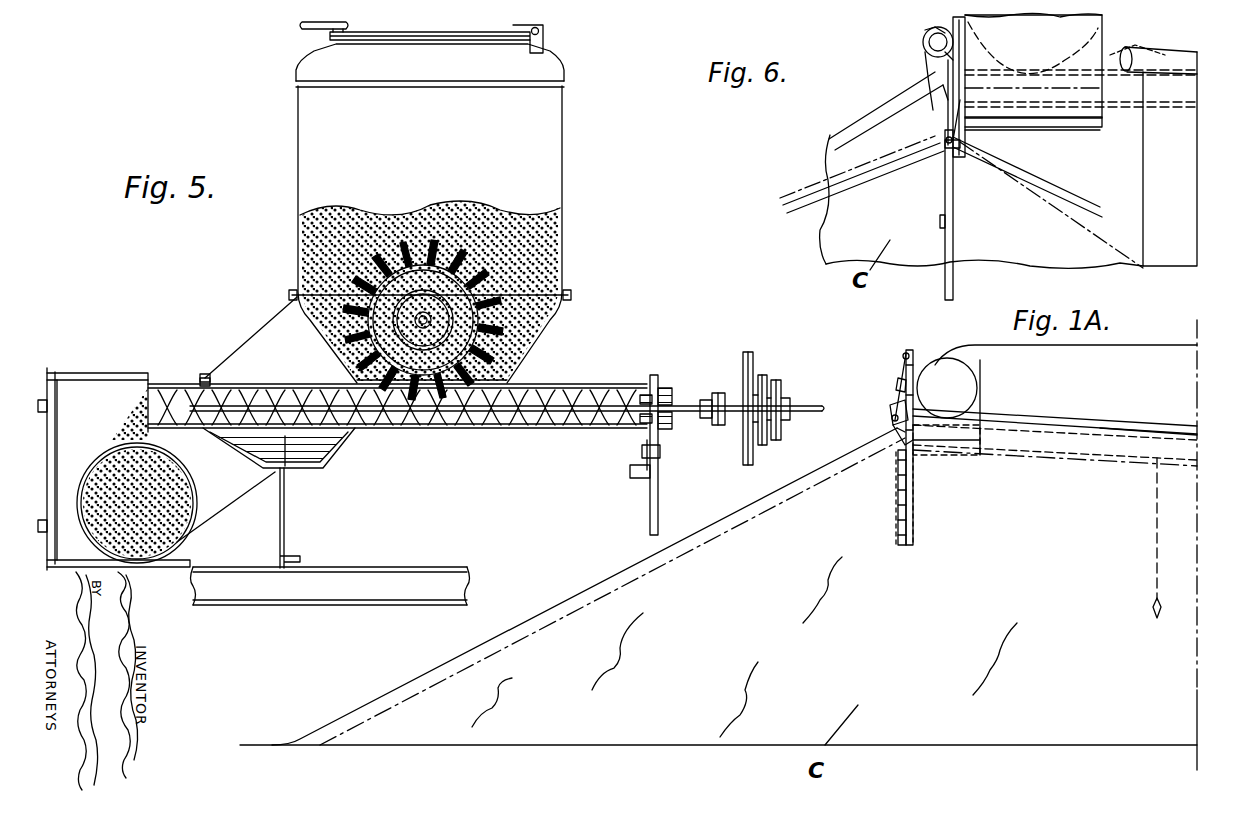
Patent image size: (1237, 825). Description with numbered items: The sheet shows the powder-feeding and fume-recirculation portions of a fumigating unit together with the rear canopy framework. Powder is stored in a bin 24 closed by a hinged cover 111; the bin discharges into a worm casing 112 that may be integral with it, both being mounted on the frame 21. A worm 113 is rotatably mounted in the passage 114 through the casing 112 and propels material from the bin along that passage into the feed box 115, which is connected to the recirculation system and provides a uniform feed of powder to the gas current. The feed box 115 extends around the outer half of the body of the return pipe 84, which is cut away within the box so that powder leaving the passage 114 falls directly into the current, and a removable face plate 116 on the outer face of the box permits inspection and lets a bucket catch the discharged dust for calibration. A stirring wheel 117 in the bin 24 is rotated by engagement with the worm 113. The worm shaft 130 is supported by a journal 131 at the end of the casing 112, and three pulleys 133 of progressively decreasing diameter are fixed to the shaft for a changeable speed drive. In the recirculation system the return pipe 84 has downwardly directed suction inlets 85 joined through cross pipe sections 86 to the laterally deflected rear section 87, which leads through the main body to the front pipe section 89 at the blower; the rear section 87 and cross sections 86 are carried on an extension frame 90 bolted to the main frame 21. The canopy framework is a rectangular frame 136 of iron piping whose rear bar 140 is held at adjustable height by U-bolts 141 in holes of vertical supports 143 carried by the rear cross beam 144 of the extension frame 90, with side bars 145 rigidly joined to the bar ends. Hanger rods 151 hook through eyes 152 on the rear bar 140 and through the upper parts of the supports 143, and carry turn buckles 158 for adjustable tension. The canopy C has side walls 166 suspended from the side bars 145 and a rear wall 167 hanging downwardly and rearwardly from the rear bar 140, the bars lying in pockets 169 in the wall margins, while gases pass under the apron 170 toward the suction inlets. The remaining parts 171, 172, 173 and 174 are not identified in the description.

In FIG. 5, the bin 24 is at (532, 145).
In FIG. 5, the hinged cover 111 is at (430, 39).
In FIG. 5, the front pipe section 89 is at (285, 343).
In FIG. 5, the stirring wheel 117 is at (478, 283).
In FIG. 5, the worm casing 112 is at (522, 388).
In FIG. 5, the passage 114 is at (518, 424).
In FIG. 5, the worm 113 is at (583, 424).
In FIG. 5, the feed box 115 is at (108, 378).
In FIG. 5, the removable face plate 116 is at (47, 440).
In FIG. 5, the return pipe 84 is at (167, 558).
In FIG. 1A, the return pipe 84 is at (1140, 368).
In FIG. 5, the frame 21 is at (375, 590).
In FIG. 5, the journal 131 is at (677, 437).
In FIG. 5, the worm shaft 130 is at (688, 404).
In FIG. 5, the pulleys 133 is at (775, 375).
In FIG. 1A, the rear wall 167 is at (612, 578).
In FIG. 6, the rear wall 167 is at (852, 129).
In FIG. 1A, the side walls 166 is at (1058, 718).
In FIG. 6, the side walls 166 is at (1060, 240).
In FIG. 1A, the rear section 87 is at (1020, 380).
In FIG. 1A, the cross pipe sections 86 is at (947, 380).
In FIG. 6, the cross pipe sections 86 is at (1088, 34).
In FIG. 1A, the vertical supports 143 is at (908, 350).
In FIG. 6, the vertical supports 143 is at (966, 47).
In FIG. 1A, the pockets 169 is at (1088, 443).
In FIG. 6, the pockets 169 is at (935, 66).
In FIG. 1A, the extension frame 90 is at (1185, 432).
In FIG. 1A, the suction inlets 85 is at (950, 453).
In FIG. 6, the suction inlets 85 is at (1067, 127).
In FIG. 1A, the hanger rods 151 is at (898, 376).
In FIG. 1A, the turn buckles 158 is at (896, 385).
In FIG. 1A, the eyes 152 is at (902, 357).
In FIG. 1A, the U-bolts 141 is at (893, 410).
In FIG. 6, the U-bolts 141 is at (935, 60).
In FIG. 1A, the rear bar 140 is at (893, 428).
In FIG. 6, the rear bar 140 is at (930, 47).
In FIG. 1A, the post 174 is at (910, 500).
In FIG. 6, the post 174 is at (952, 240).
In FIG. 1A, the strut 172 is at (906, 526).
In FIG. 6, the strut 172 is at (842, 176).
In FIG. 1A, the apron 170 is at (1155, 537).
In FIG. 1A, the weight 171 is at (1152, 615).
In FIG. 6, the rear cross beam 144 is at (1081, 88).
In FIG. 6, the shelf 173 is at (967, 118).
In FIG. 6, the frame 136 is at (925, 38).
In FIG. 6, the side bars 145 is at (1146, 70).